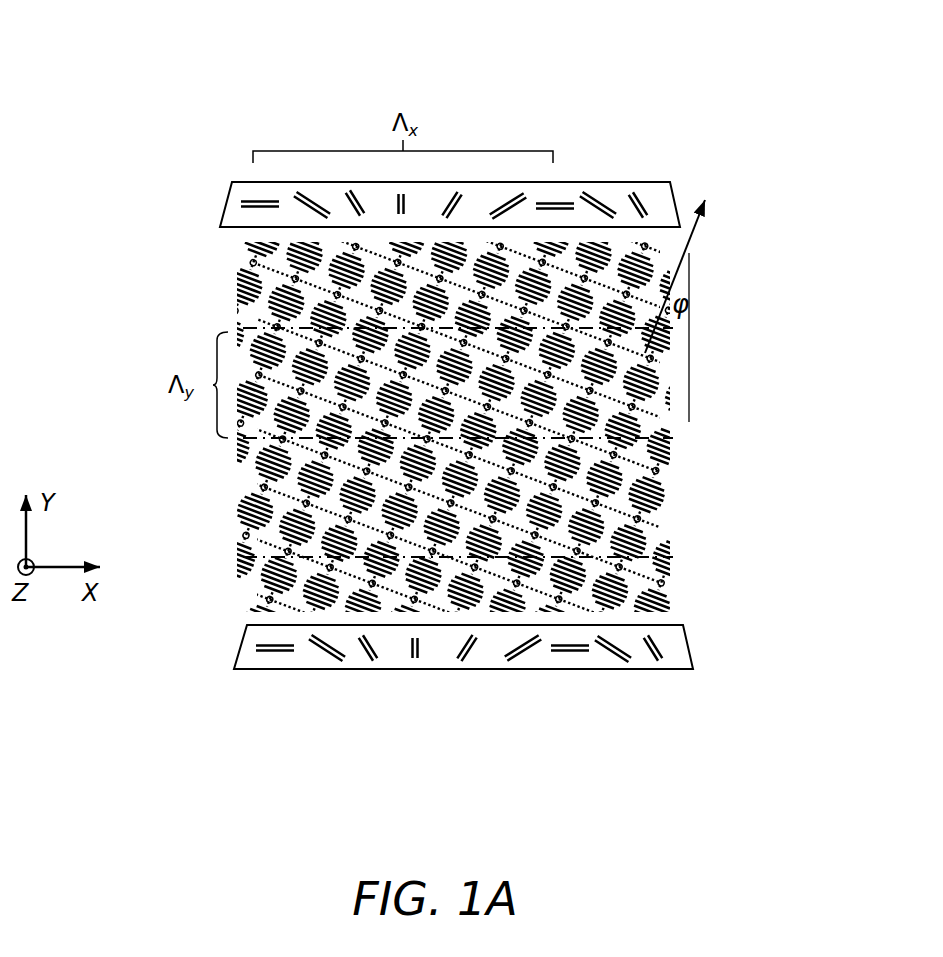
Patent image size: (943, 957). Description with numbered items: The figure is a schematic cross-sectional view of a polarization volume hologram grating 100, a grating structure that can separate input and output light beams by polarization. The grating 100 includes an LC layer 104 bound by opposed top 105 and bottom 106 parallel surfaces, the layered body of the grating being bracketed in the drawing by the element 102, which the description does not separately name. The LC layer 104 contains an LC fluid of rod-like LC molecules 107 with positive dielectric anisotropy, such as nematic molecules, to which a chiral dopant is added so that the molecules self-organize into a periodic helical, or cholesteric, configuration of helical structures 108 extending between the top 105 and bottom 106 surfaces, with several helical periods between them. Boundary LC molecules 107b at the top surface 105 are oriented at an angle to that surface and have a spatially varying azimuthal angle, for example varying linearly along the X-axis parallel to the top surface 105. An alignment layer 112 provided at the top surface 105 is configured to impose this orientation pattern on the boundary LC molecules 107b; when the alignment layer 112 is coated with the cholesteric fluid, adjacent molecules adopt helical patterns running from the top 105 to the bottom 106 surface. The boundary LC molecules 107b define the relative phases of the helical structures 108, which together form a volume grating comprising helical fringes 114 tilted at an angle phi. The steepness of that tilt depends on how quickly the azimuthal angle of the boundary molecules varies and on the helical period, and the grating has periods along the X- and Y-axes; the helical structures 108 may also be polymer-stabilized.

The polarization volume hologram (PVH) grating 100 is at (457, 60).
The metasurface array 102 is at (170, 249).
The LC layer 104 is at (721, 560).
The top parallel surface 105 is at (652, 200).
The bottom parallel surface 106 is at (603, 663).
The LC molecules 107 is at (300, 600).
The boundary LC molecules 107b is at (598, 204).
The helical structures 108 is at (253, 465).
The alignment layer 112 is at (216, 224).
The helical fringes 114 is at (690, 430).